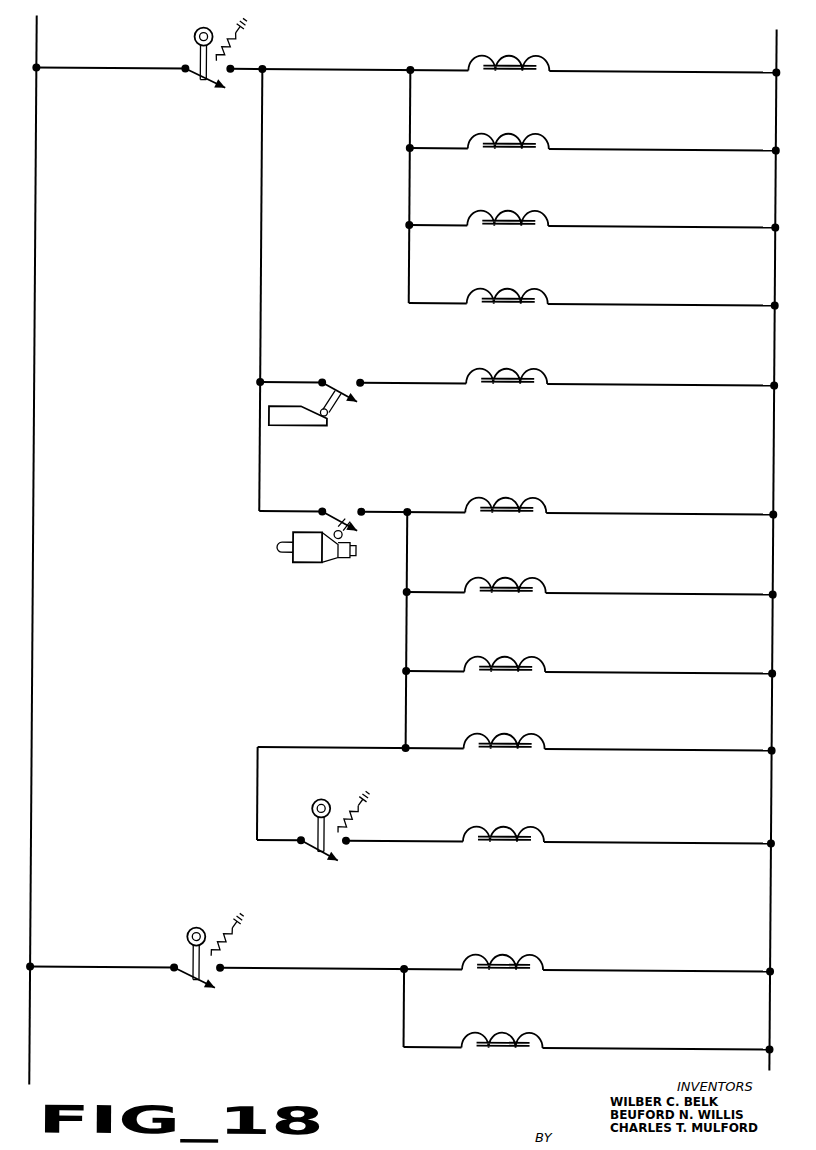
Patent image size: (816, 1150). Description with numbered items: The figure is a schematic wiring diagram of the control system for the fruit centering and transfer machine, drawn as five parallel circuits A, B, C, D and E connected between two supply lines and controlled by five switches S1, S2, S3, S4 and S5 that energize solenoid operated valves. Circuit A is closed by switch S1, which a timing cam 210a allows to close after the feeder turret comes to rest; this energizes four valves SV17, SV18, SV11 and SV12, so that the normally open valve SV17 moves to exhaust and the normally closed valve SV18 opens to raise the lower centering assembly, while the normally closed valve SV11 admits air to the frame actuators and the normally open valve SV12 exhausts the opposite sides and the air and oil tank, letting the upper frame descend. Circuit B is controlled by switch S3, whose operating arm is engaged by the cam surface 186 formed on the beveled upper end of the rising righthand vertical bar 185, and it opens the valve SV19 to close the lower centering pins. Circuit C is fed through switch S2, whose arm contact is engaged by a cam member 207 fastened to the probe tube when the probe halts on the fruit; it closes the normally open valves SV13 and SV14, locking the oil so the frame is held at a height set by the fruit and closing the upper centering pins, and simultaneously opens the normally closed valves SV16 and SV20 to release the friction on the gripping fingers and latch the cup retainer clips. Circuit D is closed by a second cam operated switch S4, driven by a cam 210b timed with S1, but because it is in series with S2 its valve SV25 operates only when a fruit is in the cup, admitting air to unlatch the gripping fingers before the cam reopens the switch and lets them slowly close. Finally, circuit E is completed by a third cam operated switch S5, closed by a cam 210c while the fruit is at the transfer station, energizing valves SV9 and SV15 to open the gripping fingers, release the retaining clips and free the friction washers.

The circuit A is at (655, 52).
The circuit B is at (659, 375).
The circuit C is at (663, 505).
The circuit D is at (655, 833).
The circuit E is at (651, 963).
The solenoid operated valve SV17 is at (539, 56).
The solenoid operated valve SV18 is at (539, 134).
The solenoid valve SV11 is at (539, 211).
The solenoid valve SV12 is at (539, 289).
The solenoid valve SV19 is at (539, 369).
The solenoid valve SV13 is at (539, 498).
The solenoid valve SV14 is at (539, 578).
The solenoid valve SV16 is at (539, 657).
The solenoid valve SV20 is at (539, 734).
The solenoid valve SV25 is at (539, 827).
The solenoid valve SV9 is at (539, 955).
The solenoid valve SV15 is at (539, 1033).
The switch S1 is at (214, 90).
The switch S2 is at (336, 513).
The switch S3 is at (345, 394).
The switch S4 is at (329, 858).
The switch S5 is at (207, 991).
The timing cam 210a is at (190, 38).
The cam 210b is at (325, 799).
The cam 210c is at (190, 934).
The righthand vertical bar 185 is at (292, 425).
The cam surface 186 is at (327, 417).
The cam member 207 is at (327, 563).